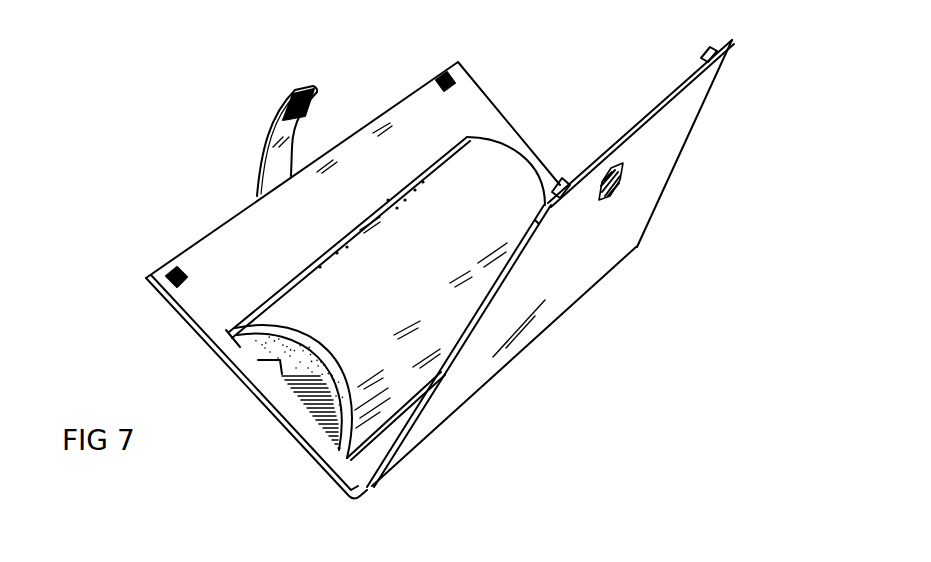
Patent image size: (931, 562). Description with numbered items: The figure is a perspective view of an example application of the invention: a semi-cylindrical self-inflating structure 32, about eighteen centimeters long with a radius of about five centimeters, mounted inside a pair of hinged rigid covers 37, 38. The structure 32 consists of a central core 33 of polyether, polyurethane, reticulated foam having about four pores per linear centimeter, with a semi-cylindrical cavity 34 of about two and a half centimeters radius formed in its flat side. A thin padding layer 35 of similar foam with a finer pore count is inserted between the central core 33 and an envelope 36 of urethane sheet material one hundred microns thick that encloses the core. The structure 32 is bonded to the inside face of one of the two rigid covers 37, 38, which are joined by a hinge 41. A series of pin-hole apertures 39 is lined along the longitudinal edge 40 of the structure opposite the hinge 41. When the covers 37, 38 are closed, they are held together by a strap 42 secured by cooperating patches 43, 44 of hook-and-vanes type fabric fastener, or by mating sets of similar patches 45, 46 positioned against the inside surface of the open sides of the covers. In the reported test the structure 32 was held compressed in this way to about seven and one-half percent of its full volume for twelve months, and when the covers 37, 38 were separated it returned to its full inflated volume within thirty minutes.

The self-inflating structure 32 is at (568, 104).
The central core 33 is at (237, 372).
The semi-cylindrical cavity 34 is at (297, 377).
The channel lip 35 is at (265, 314).
The envelope 36 is at (347, 277).
The rigid cover 37 is at (400, 100).
The rigid cover 38 is at (670, 140).
The pin-hole apertures 39 is at (428, 182).
The longitudinal edge 40 is at (465, 152).
The hinge 41 is at (477, 390).
The strap 42 is at (258, 144).
The patch 43 is at (307, 102).
The patch 44 is at (605, 202).
The patch 45 is at (462, 64).
The patch 46 is at (707, 48).